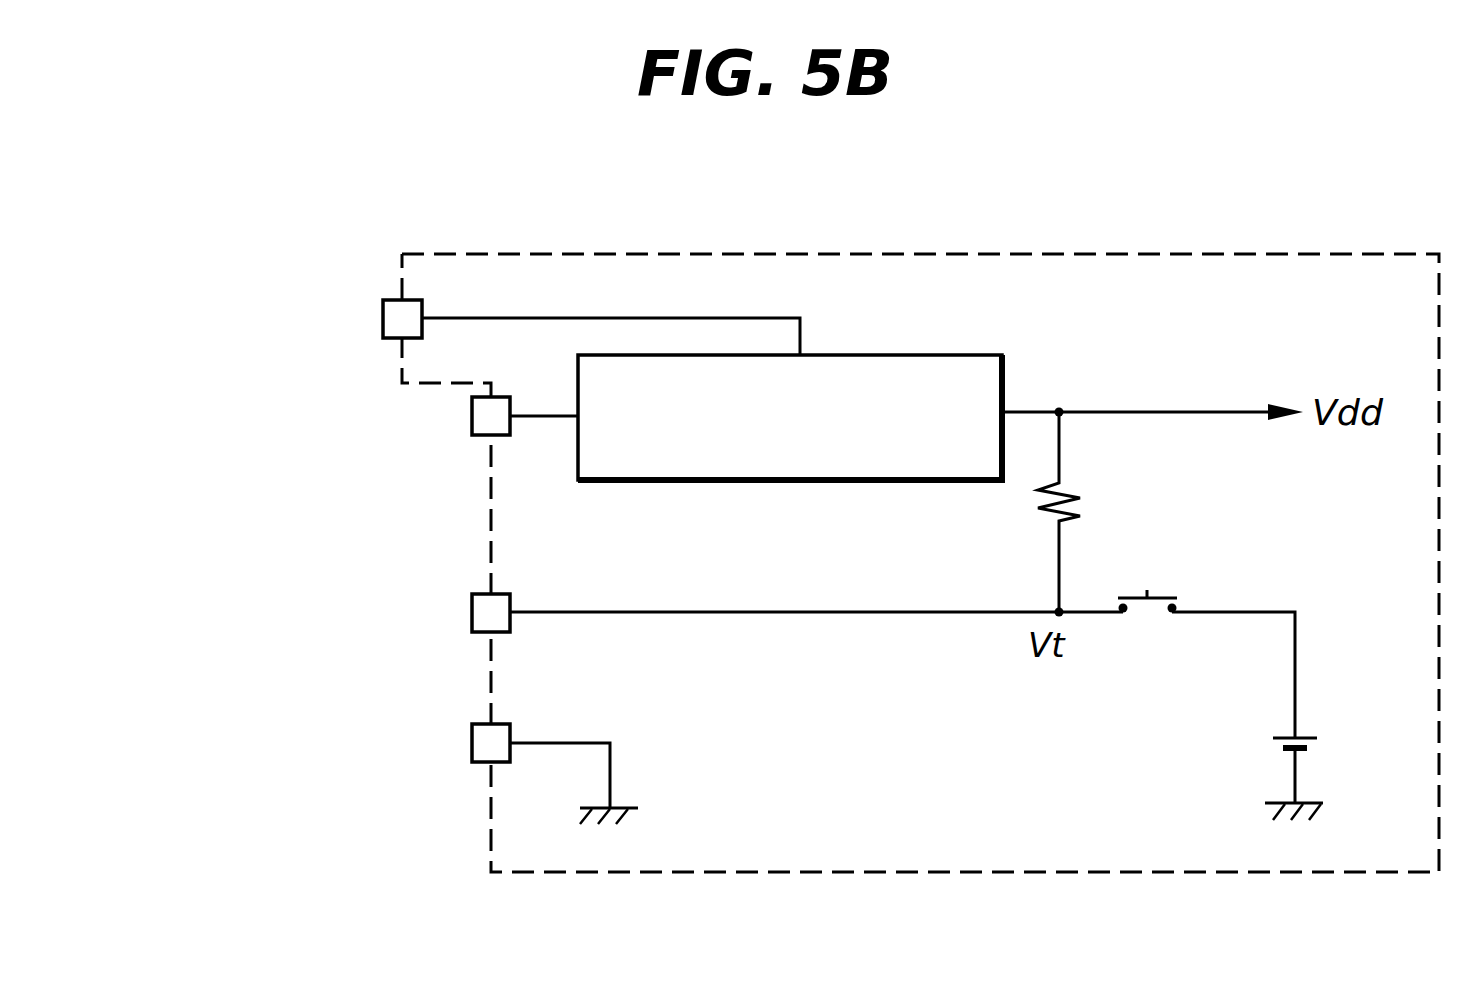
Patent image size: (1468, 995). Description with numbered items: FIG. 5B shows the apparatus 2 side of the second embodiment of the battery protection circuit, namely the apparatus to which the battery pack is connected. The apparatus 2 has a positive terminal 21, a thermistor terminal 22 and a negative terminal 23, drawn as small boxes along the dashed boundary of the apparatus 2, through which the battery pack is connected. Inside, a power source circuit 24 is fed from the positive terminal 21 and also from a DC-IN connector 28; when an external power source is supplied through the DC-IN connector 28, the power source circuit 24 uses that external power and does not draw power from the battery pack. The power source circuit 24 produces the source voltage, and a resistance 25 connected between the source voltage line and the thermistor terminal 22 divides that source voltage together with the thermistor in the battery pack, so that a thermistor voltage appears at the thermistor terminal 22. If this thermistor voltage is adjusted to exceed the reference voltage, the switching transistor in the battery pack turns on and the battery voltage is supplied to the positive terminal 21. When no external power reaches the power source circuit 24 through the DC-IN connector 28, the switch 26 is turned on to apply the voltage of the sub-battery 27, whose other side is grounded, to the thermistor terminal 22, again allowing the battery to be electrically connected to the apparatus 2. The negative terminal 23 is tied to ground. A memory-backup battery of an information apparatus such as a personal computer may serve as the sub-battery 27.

The apparatus 2 is at (652, 255).
The positive terminal 21 is at (472, 416).
The thermistor terminal 22 is at (472, 612).
The negative terminal 23 is at (472, 740).
The power source circuit 24 is at (890, 355).
The resistance 25 is at (1080, 507).
The switch 26 is at (1173, 595).
The sub-battery 27 is at (1273, 745).
The DC-IN connector 28 is at (383, 318).